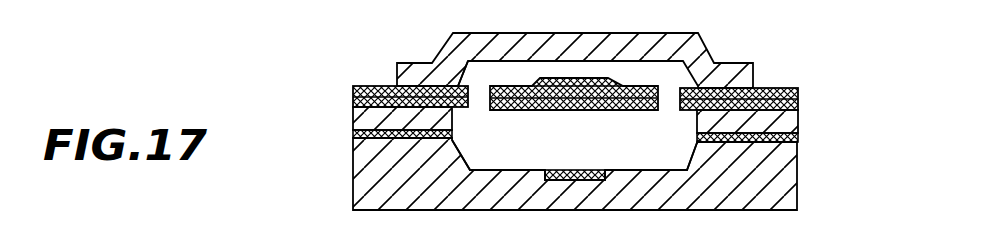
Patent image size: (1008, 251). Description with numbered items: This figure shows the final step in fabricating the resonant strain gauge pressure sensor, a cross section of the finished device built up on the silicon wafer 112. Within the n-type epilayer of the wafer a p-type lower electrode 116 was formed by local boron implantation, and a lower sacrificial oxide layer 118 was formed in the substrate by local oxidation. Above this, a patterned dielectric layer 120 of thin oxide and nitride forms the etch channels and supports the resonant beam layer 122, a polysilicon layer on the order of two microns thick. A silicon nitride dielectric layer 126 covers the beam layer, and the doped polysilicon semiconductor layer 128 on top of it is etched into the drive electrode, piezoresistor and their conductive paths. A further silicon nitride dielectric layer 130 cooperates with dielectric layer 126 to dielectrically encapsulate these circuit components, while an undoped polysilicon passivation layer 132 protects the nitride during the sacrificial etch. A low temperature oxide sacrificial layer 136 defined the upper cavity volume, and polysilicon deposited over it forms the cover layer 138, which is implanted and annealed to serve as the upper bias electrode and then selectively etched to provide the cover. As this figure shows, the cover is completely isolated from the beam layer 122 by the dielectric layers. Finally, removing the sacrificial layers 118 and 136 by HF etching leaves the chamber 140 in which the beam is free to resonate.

The silicon wafer 112 is at (362, 178).
The lower electrode 116 is at (584, 170).
The lower sacrificial oxide layer 118 is at (504, 141).
The dielectric layer 120 is at (353, 134).
The resonant beam layer 122 is at (776, 121).
The dielectric layer 126 is at (352, 108).
The semiconductor layer 128 is at (574, 100).
The dielectric layer 130 is at (798, 96).
The passivation layer 132 is at (352, 89).
The sacrificial layer 136 is at (462, 60).
The cover layer 138 is at (709, 54).
The chamber 140 is at (513, 68).